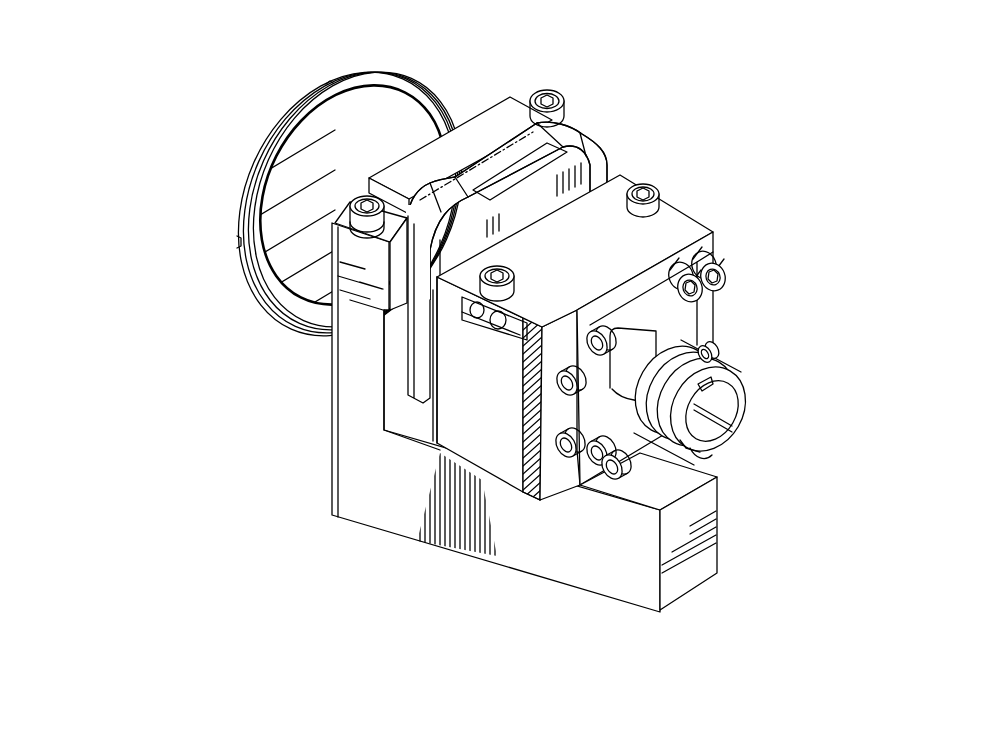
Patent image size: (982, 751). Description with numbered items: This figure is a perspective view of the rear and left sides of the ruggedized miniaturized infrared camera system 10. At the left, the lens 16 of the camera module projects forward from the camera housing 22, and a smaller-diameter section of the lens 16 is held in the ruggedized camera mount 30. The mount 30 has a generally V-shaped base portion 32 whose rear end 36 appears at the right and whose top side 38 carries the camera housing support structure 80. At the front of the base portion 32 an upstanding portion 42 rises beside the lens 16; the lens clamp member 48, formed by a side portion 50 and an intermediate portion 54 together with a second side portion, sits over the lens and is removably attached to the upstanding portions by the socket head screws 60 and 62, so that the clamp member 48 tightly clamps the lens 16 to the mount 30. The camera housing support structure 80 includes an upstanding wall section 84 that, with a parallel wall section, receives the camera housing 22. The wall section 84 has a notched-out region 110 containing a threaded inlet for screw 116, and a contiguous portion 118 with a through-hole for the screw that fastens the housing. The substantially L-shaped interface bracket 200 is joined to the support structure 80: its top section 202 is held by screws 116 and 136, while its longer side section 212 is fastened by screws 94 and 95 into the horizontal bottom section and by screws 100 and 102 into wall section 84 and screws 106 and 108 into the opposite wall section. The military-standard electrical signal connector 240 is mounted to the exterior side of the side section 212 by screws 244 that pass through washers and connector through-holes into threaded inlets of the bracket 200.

The ruggedized miniaturized infrared camera system 10 is at (150, 129).
The lens 16 is at (262, 141).
The camera housing 22 is at (580, 140).
The ruggedized camera mount 30 is at (328, 484).
The base portion 32 is at (440, 548).
The rear end 36 is at (700, 575).
The top side 38 is at (383, 412).
The upstanding portion 42 is at (363, 368).
The lens clamp member 48 is at (487, 118).
The side portion 50 is at (354, 222).
The intermediate portion 54 is at (432, 152).
The screw 60 is at (351, 292).
The screw 62 is at (545, 93).
The camera housing support structure 80 is at (440, 452).
The upstanding wall section 84 is at (506, 463).
The screw 94 is at (615, 470).
The screw 95 is at (708, 459).
The screw 100 is at (566, 368).
The screw 102 is at (567, 459).
The screw 106 is at (718, 262).
The screw 108 is at (716, 349).
The notched-out region 110 is at (513, 328).
The screw 116 is at (515, 277).
The portion 118 is at (447, 310).
The screw 136 is at (652, 190).
The interface bracket 200 is at (712, 228).
The top section 202 is at (678, 222).
The side section 212 is at (533, 490).
The electrical signal connector 240 is at (750, 392).
The screw 244 is at (600, 330).